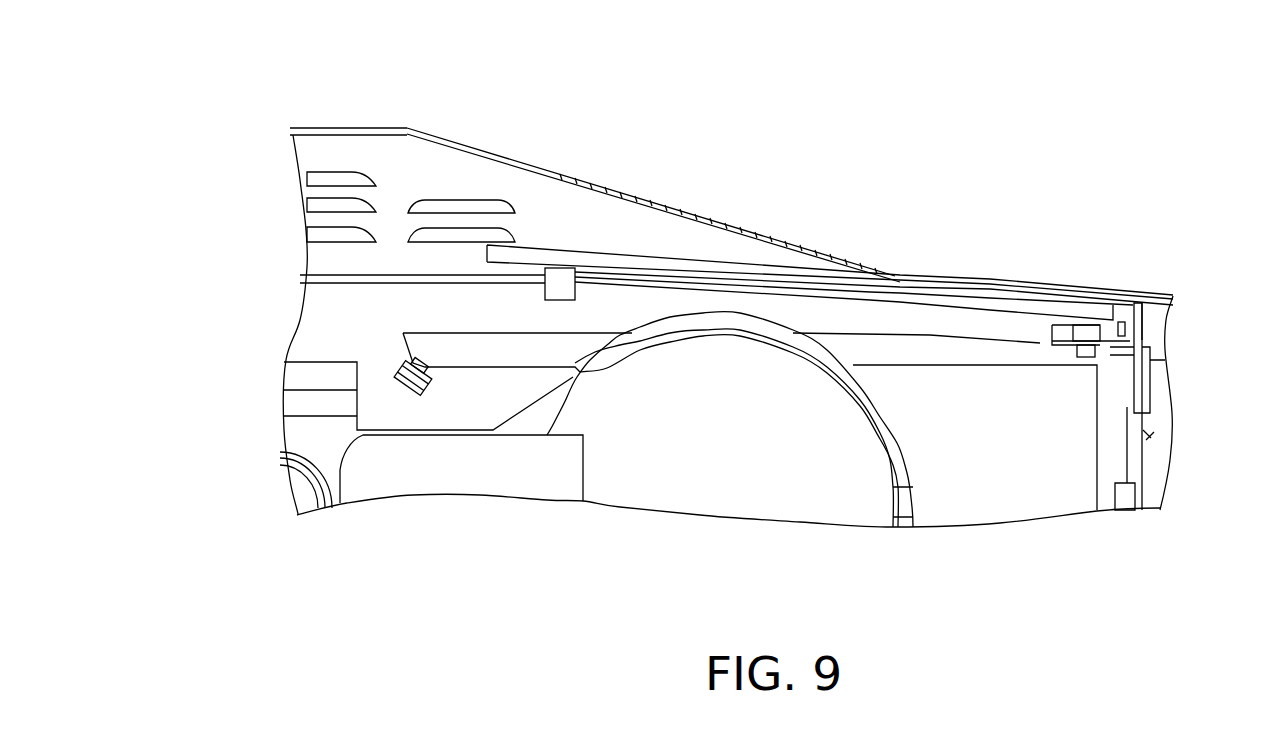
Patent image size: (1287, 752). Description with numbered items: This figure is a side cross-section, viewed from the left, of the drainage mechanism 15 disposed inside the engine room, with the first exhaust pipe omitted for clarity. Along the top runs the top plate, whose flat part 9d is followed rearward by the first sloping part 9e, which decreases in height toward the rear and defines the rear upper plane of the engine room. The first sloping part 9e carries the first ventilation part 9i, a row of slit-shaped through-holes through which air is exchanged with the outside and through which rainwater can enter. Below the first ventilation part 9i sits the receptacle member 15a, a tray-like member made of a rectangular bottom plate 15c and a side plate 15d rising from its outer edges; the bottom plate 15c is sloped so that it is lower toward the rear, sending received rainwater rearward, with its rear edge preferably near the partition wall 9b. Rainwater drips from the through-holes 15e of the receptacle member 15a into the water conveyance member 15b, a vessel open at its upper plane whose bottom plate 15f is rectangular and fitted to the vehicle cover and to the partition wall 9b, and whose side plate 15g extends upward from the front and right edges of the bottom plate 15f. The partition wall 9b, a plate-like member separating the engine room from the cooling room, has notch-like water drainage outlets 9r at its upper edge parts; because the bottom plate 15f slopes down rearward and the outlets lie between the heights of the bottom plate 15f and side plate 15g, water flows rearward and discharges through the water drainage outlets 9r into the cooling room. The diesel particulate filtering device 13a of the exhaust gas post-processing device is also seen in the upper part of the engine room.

The flat part 9d is at (352, 127).
The first sloping part 9e is at (481, 150).
The first ventilation part 9i is at (662, 200).
The water drainage outlet 9r is at (1142, 338).
The partition wall 9b is at (1143, 442).
The diesel particulate filtering device 13a is at (905, 494).
The drainage mechanism 15 is at (1125, 145).
The receptacle member 15a is at (1013, 292).
The water conveyance member 15b is at (1143, 300).
The bottom plate 15c is at (960, 318).
The side plate 15d is at (1120, 322).
The through-holes 15e is at (1073, 286).
The bottom plate 15f is at (1071, 358).
The side plate 15g is at (1046, 330).